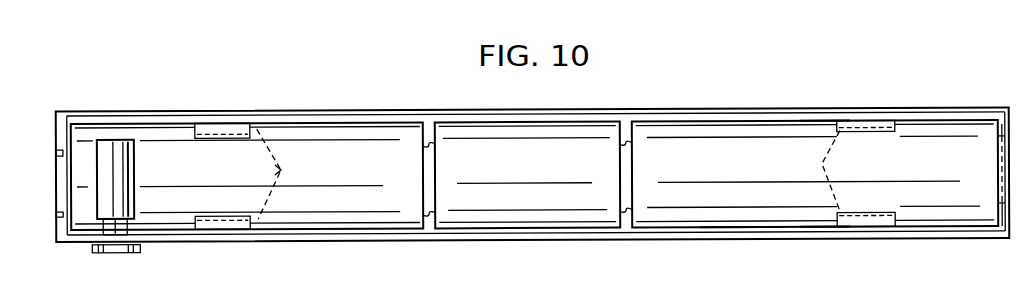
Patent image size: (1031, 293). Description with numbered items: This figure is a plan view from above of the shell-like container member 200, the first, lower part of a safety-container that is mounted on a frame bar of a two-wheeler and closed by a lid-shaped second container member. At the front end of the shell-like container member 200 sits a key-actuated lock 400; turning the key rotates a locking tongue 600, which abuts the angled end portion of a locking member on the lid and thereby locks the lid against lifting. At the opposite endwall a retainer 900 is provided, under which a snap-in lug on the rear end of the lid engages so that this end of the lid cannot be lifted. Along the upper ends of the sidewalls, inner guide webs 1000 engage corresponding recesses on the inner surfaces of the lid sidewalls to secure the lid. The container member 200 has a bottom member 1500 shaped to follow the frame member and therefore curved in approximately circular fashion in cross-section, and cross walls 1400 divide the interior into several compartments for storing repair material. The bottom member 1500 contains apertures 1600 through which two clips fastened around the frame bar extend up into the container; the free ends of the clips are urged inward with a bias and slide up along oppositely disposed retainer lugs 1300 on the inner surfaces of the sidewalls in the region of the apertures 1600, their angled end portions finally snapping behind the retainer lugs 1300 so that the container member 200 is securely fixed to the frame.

The shell-like container member 200 is at (729, 109).
The lock 400 is at (125, 251).
The locking tongue 600 is at (120, 167).
The retainer 900 is at (996, 192).
The inner guide webs 1000 is at (815, 120).
The retainer lugs 1300 is at (207, 125).
The cross walls 1400 is at (435, 168).
The bottom member 1500 is at (732, 212).
The apertures 1600 is at (823, 166).